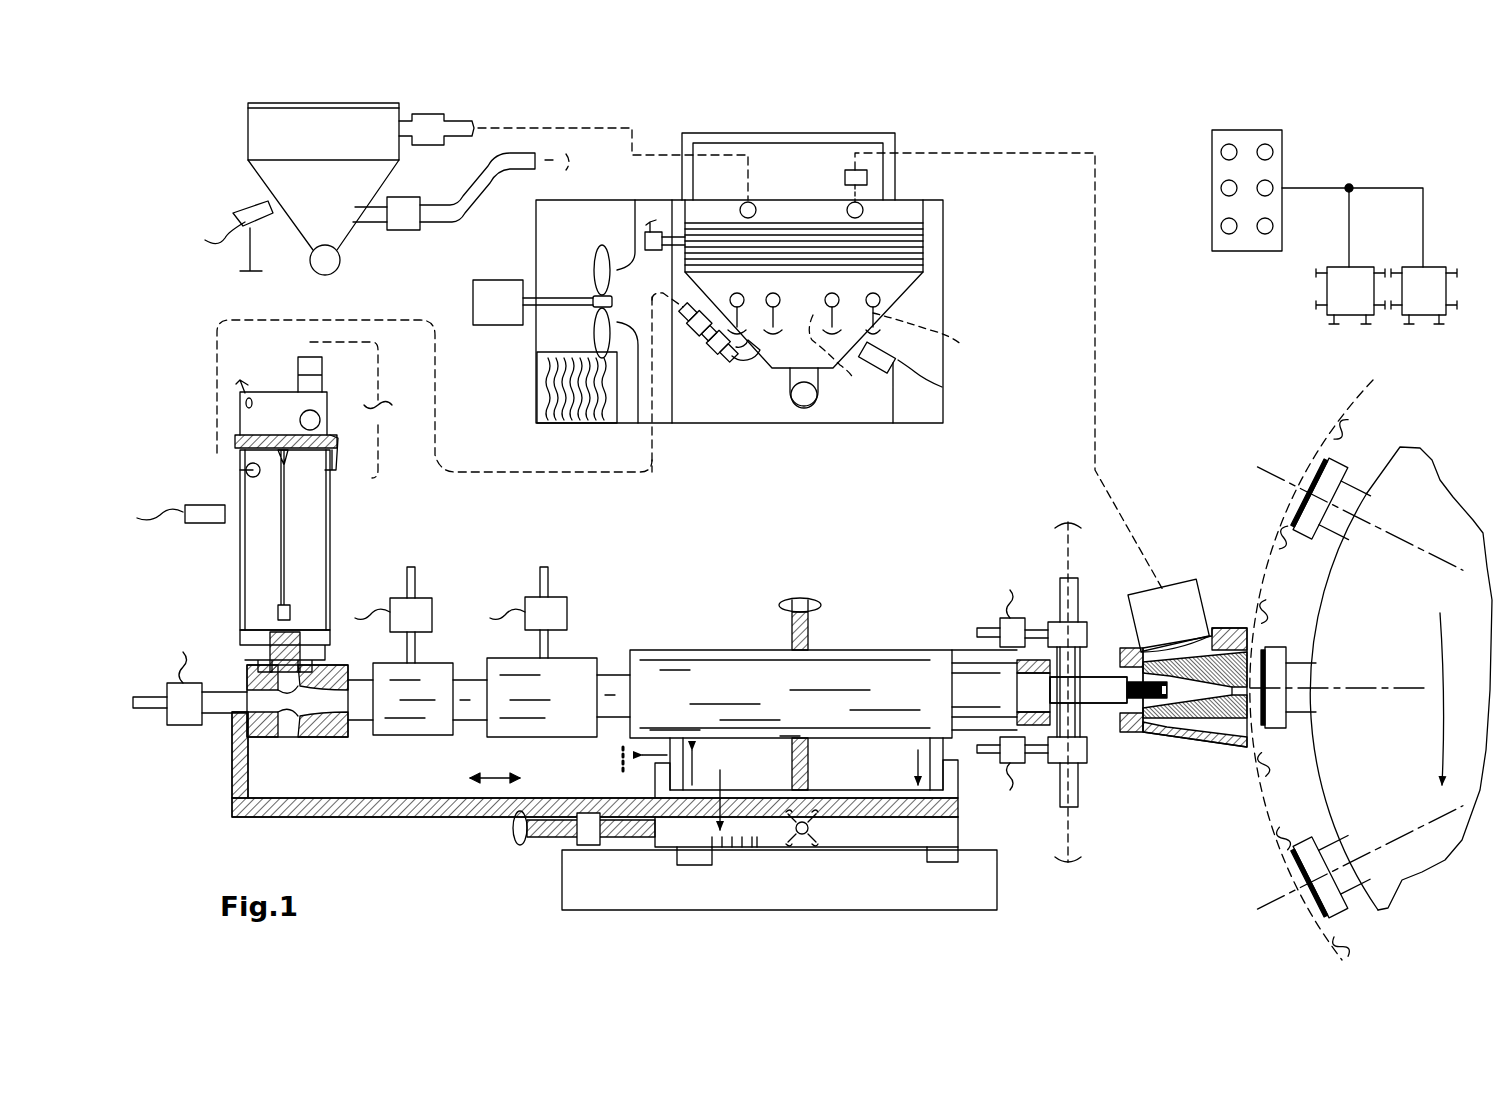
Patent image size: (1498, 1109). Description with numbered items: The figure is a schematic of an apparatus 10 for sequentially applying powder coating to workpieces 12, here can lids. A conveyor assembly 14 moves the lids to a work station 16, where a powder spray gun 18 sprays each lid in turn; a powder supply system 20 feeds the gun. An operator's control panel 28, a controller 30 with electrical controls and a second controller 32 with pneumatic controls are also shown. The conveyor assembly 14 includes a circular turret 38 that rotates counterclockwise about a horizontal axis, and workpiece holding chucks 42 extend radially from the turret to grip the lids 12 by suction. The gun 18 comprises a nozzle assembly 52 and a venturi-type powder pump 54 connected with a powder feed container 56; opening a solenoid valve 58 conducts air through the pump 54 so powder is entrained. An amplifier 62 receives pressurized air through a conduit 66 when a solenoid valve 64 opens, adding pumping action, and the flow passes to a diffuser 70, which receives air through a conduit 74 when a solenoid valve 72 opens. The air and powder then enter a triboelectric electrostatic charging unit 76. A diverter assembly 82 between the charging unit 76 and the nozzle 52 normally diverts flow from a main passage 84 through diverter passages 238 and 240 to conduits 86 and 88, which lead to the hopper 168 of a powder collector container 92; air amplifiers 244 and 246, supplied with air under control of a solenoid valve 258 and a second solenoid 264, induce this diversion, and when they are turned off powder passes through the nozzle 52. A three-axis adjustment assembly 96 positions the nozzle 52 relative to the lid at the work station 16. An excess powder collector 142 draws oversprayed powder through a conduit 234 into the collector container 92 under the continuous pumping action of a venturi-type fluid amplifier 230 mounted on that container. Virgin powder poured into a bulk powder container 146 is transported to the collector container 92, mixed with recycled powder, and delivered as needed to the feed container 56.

The apparatus 10 is at (1443, 137).
The workpieces 12 is at (1322, 462).
The conveyor assembly 14 is at (1432, 440).
The work station 16 is at (1230, 545).
The powder spray gun 18 is at (680, 640).
The powder supply system 20 is at (1040, 135).
The operator's control panel 28 is at (1228, 130).
The controller 30 is at (1338, 291).
The second controller 32 is at (1420, 275).
The circular turret 38 is at (1440, 518).
The workpiece holding chucks 42 is at (1340, 540).
The nozzle assembly 52 is at (1232, 612).
The venturi-type powder pump 54 is at (312, 740).
The powder feed container 56 is at (240, 574).
The solenoid valve 58 is at (190, 720).
The amplifier 62 is at (412, 722).
The solenoid valve 64 is at (420, 615).
The conduit 66 is at (415, 645).
The diffuser 70 is at (545, 722).
The solenoid valve 72 is at (565, 615).
The conduit 74 is at (548, 648).
The electrostatic charging unit 76 is at (870, 660).
The diverter assembly 82 is at (1023, 585).
The main passage 84 is at (1085, 705).
The conduit 86 is at (937, 341).
The conduit 88 is at (841, 361).
The powder collector container 92 is at (965, 272).
The three-axis adjustment assembly 96 is at (545, 905).
The excess powder collector 142 is at (1175, 770).
The bulk powder container 146 is at (240, 155).
The hopper 168 is at (892, 279).
The venturi-type fluid amplifier 230 is at (867, 177).
The conduit 234 is at (1170, 590).
The diverter passage 238 is at (1070, 660).
The diverter passage 240 is at (1040, 700).
The air amplifier 244 is at (1058, 622).
The second amplifier 246 is at (1062, 760).
The solenoid valve 258 is at (1003, 620).
The second solenoid 264 is at (1003, 762).